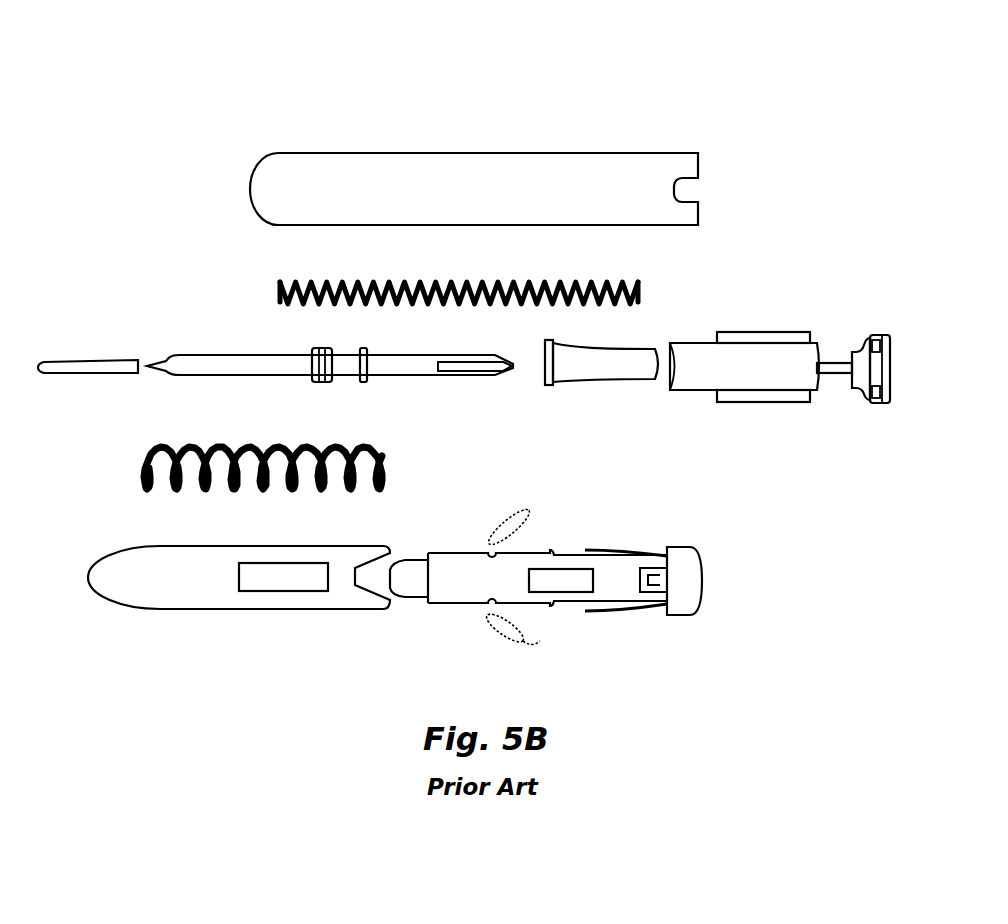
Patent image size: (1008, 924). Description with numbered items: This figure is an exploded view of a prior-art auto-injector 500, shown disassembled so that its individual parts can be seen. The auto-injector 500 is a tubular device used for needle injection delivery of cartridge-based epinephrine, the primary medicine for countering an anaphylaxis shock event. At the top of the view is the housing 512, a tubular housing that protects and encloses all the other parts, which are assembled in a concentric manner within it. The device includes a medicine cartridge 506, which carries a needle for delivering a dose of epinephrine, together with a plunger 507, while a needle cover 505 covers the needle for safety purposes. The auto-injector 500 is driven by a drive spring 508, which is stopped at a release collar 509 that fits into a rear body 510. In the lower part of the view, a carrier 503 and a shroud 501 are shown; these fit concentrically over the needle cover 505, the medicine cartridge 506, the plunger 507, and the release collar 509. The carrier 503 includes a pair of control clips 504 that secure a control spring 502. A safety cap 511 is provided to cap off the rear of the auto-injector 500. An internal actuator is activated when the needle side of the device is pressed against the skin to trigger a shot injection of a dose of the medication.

The auto-injector 500 is at (488, 104).
The shroud 501 is at (277, 609).
The control spring 502 is at (390, 478).
The carrier 503 is at (470, 606).
The control clips 504 is at (548, 526).
The needle cover 505 is at (77, 360).
The medicine cartridge 506 is at (250, 377).
The plunger 507 is at (413, 355).
The drive spring 508 is at (422, 280).
The release collar 509 is at (620, 384).
The rear body 510 is at (767, 332).
The safety cap 511 is at (878, 404).
The housing 512 is at (570, 153).